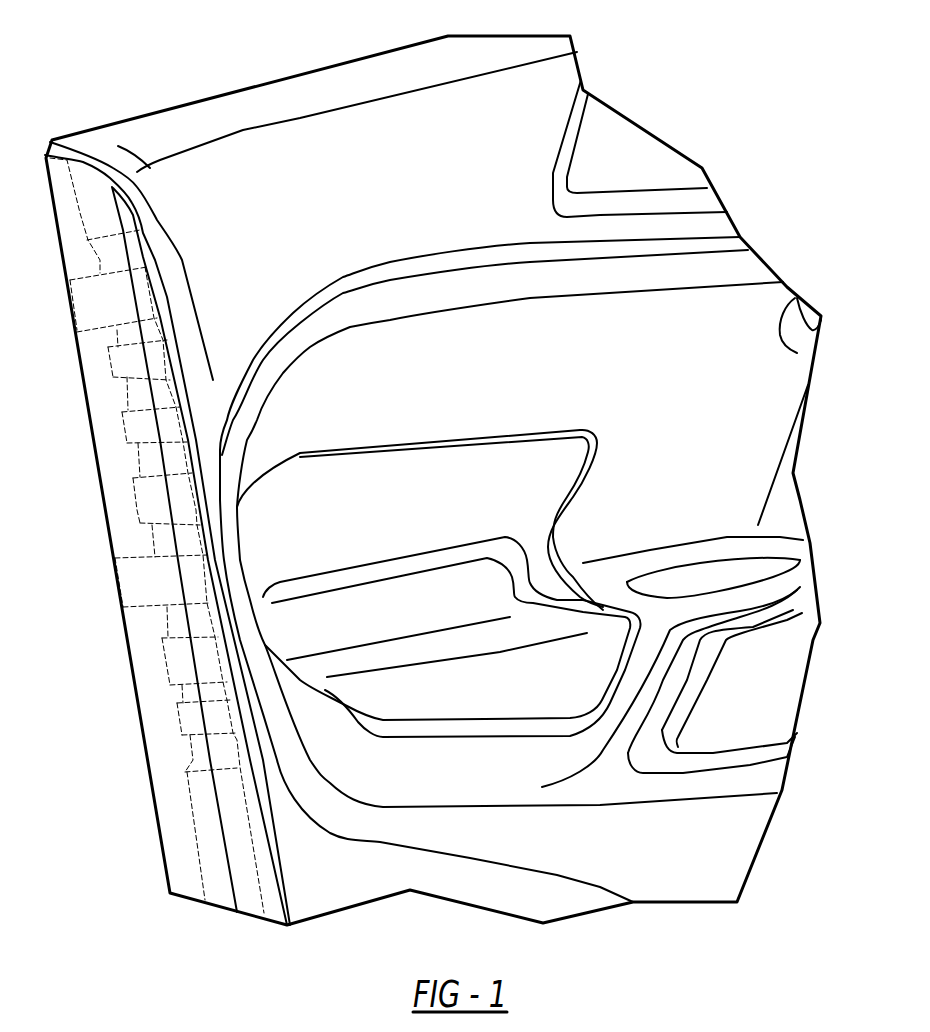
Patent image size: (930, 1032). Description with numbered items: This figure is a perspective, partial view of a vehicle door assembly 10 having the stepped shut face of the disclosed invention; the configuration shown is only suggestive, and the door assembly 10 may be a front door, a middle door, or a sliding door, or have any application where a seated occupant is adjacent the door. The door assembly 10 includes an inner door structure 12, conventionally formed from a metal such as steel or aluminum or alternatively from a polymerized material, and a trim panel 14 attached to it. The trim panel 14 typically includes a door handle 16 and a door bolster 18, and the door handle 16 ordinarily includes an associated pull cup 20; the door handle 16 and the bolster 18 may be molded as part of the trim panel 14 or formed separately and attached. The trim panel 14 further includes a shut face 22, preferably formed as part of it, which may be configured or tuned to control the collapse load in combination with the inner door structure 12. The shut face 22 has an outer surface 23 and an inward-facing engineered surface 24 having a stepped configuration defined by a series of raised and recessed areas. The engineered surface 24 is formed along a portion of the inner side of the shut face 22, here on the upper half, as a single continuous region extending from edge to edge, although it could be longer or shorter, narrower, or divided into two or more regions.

The vehicle door assembly 10 is at (100, 653).
The inner door structure 12 is at (80, 212).
The trim panel 14 is at (220, 190).
The door handle 16 is at (645, 603).
The door bolster 18 is at (540, 680).
The pull cup 20 is at (713, 580).
The shut face 22 is at (207, 802).
The outer surface 23 is at (167, 788).
The engineered surface 24 is at (137, 423).